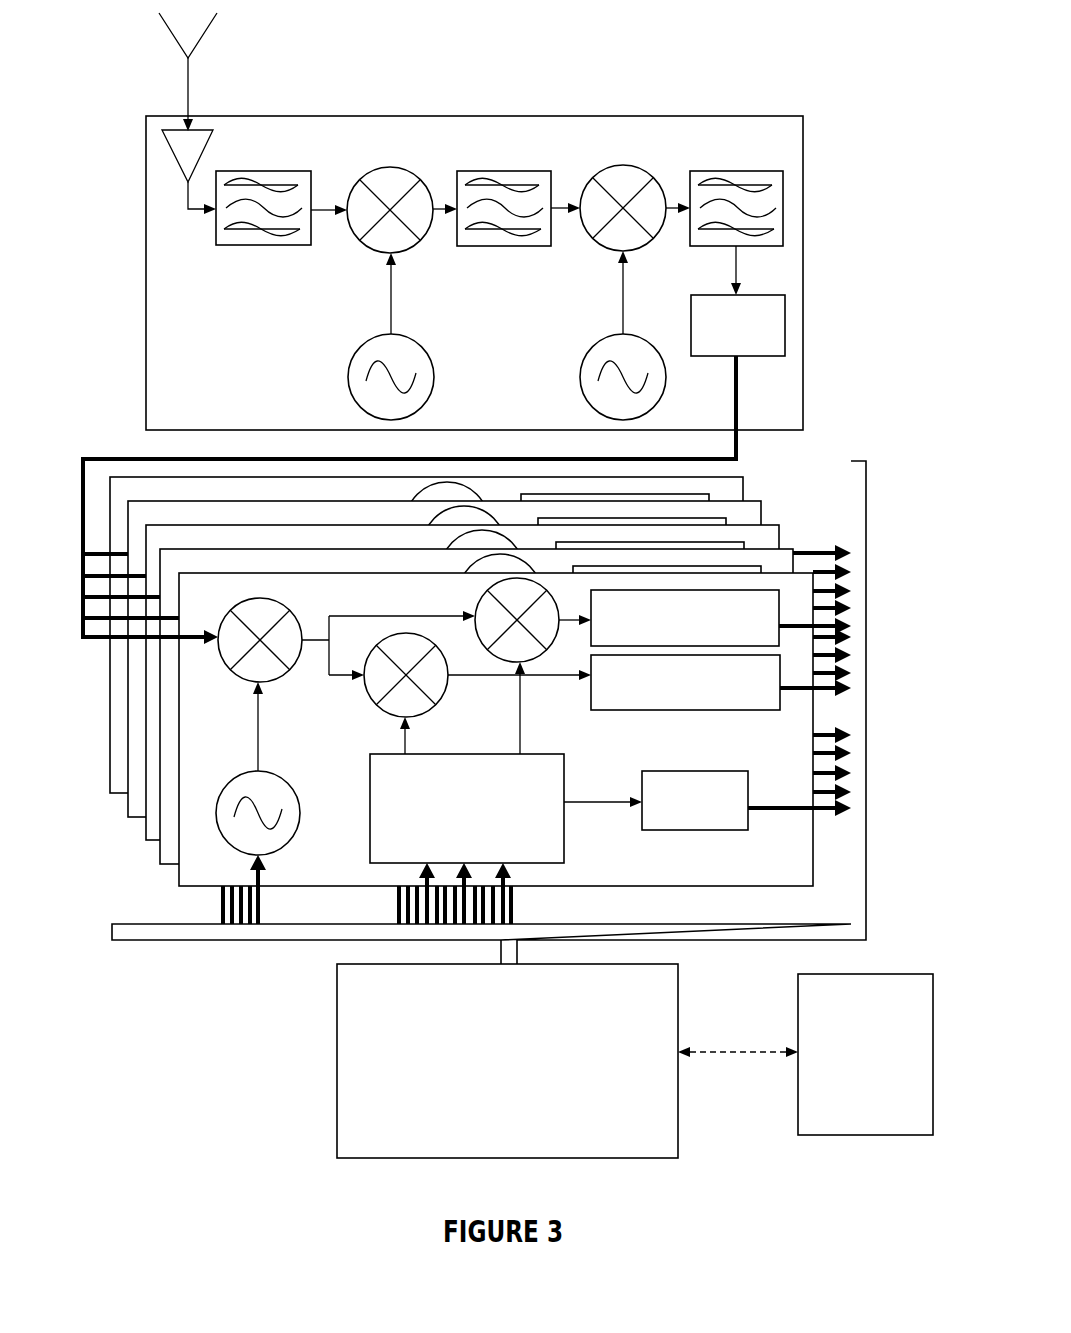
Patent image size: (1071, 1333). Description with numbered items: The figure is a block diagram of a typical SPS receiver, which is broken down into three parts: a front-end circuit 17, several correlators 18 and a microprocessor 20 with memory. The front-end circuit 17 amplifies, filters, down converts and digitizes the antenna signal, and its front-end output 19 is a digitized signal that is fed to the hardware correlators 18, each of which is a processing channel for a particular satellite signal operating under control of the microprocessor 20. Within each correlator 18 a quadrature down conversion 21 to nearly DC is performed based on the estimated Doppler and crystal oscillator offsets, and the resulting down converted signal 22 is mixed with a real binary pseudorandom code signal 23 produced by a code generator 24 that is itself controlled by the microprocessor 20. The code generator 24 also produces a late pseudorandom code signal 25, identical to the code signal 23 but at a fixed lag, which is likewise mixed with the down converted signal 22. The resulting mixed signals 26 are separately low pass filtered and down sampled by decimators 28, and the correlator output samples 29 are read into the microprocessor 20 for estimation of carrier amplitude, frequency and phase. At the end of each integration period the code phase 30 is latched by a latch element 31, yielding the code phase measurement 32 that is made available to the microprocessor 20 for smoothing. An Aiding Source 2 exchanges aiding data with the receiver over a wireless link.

The Aiding Source 2 is at (805, 1043).
The front-end circuit 17 is at (474, 221).
The correlators 18 is at (179, 877).
The front-end output 19 is at (425, 500).
The microprocessor 20 is at (496, 1061).
The down conversion 21 is at (223, 663).
The down converted signal 22 is at (346, 640).
The pseudorandom code signal 23 is at (477, 693).
The code generator 24 is at (456, 808).
The late pseudorandom code signal 25 is at (542, 708).
The mixed signals 26 is at (563, 620).
The decimators 28 is at (605, 644).
The correlator output samples 29 is at (785, 630).
The code phase 30 is at (603, 814).
The latch element 31 is at (695, 813).
The code phase measurement 32 is at (813, 735).